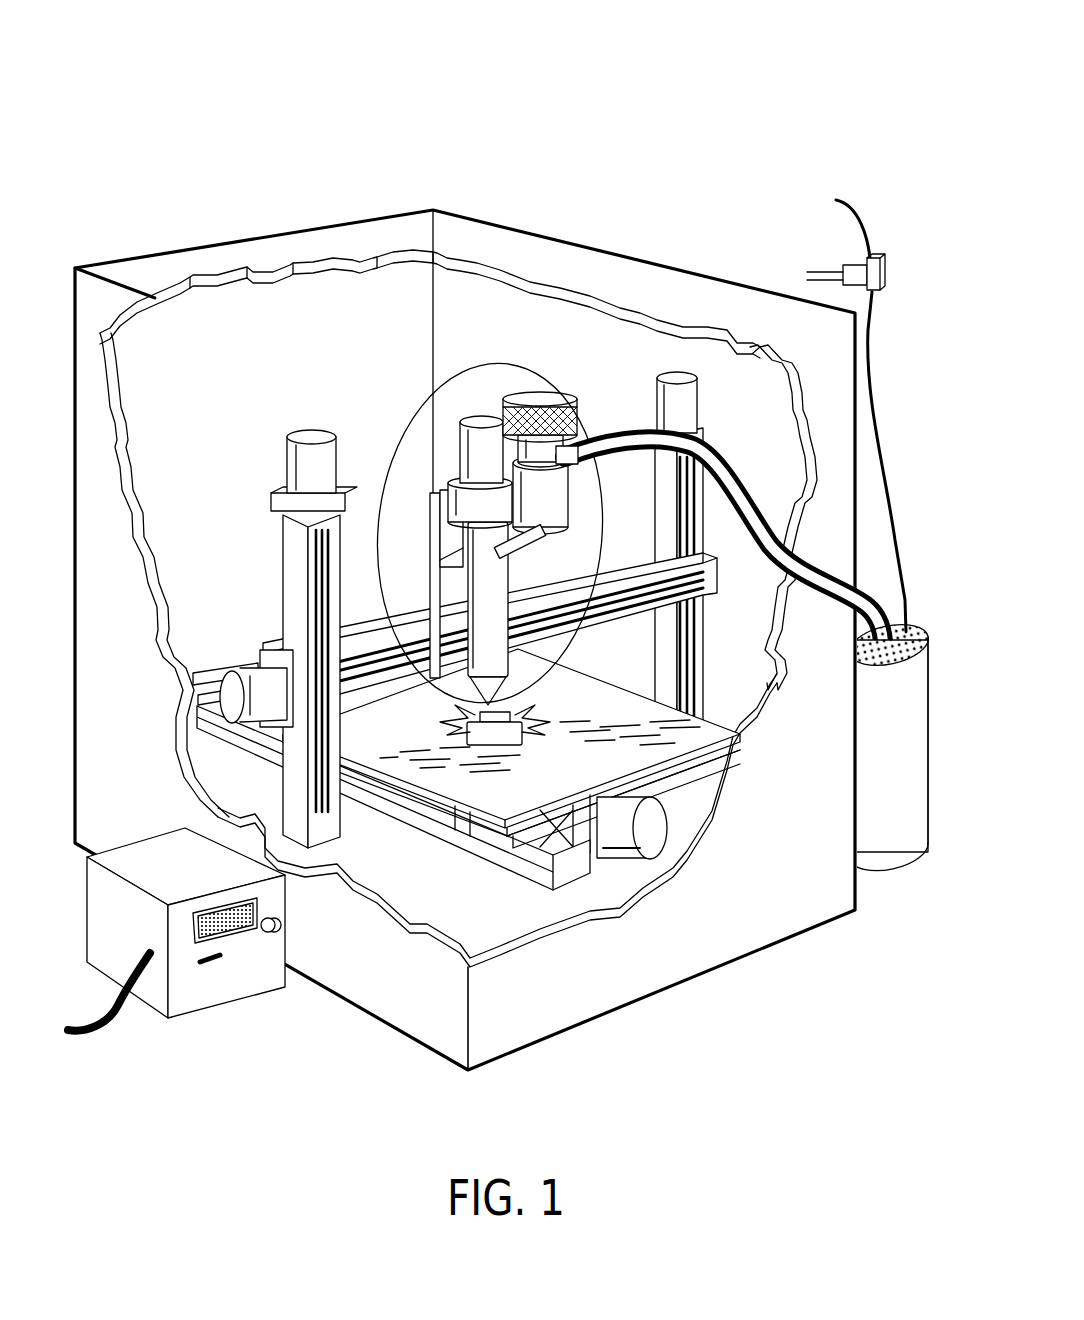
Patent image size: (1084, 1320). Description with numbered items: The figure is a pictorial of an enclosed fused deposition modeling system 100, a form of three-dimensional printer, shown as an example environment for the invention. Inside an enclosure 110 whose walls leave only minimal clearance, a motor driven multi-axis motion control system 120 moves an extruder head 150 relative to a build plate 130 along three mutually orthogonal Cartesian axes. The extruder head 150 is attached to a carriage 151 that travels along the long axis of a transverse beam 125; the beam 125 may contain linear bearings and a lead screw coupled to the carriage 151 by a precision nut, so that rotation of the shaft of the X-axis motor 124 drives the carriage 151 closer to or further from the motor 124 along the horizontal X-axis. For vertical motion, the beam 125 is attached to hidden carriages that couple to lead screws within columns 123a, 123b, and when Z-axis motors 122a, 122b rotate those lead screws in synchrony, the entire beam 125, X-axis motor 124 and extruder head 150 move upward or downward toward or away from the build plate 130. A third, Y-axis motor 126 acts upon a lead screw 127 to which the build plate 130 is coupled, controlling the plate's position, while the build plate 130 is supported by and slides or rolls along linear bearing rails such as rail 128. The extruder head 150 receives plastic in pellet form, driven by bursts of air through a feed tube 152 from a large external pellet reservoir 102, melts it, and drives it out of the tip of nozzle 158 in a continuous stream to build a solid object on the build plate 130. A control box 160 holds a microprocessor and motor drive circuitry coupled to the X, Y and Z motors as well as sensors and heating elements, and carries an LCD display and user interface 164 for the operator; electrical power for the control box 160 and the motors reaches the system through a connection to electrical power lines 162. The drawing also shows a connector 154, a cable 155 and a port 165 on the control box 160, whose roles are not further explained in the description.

The enclosed fused deposition modeling system 100 is at (665, 114).
The external pellet reservoir 102 is at (905, 750).
The enclosure 110 is at (217, 242).
The multi-axis motion control system 120 is at (373, 337).
The Z-axis motor 122a is at (283, 446).
The Z-axis motor 122b is at (670, 388).
The column 123a is at (282, 578).
The column 123b is at (657, 630).
The X-axis motor 124 is at (250, 667).
The transverse beam 125 is at (721, 580).
The Y-axis motor 126 is at (653, 860).
The lead screw 127 is at (567, 817).
The linear bearing rail 128 is at (473, 840).
The build plate 130 is at (600, 778).
The extruder head 150 is at (487, 536).
The carriage 151 is at (454, 660).
The feed tube 152 is at (730, 468).
The connector 154 is at (860, 265).
The supply cable 155 is at (853, 205).
The nozzle 158 is at (513, 678).
The control box 160 is at (214, 957).
The electrical power lines 162 is at (103, 1033).
The LCD display and user interface 164 is at (240, 935).
The port 165 is at (213, 963).